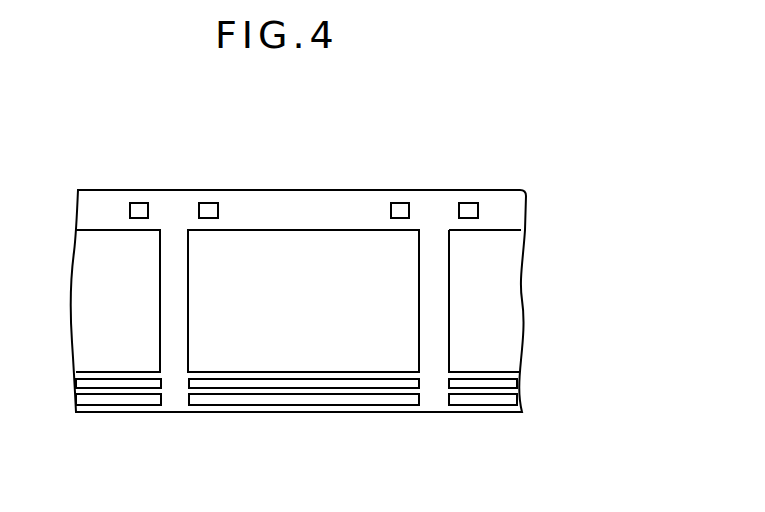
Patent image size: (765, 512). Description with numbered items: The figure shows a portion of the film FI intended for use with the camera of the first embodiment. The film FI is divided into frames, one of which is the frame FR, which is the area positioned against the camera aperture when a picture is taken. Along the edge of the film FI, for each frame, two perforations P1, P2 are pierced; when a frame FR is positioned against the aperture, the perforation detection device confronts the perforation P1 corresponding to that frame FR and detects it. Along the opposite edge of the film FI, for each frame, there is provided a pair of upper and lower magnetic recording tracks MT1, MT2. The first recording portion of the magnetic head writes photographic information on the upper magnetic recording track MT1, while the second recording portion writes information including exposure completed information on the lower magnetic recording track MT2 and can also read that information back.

The film FI is at (500, 202).
The frame FR is at (333, 230).
The perforation P1 is at (206, 203).
The perforation P2 is at (404, 203).
The upper magnetic recording track MT1 is at (416, 384).
The lower magnetic recording track MT2 is at (407, 400).